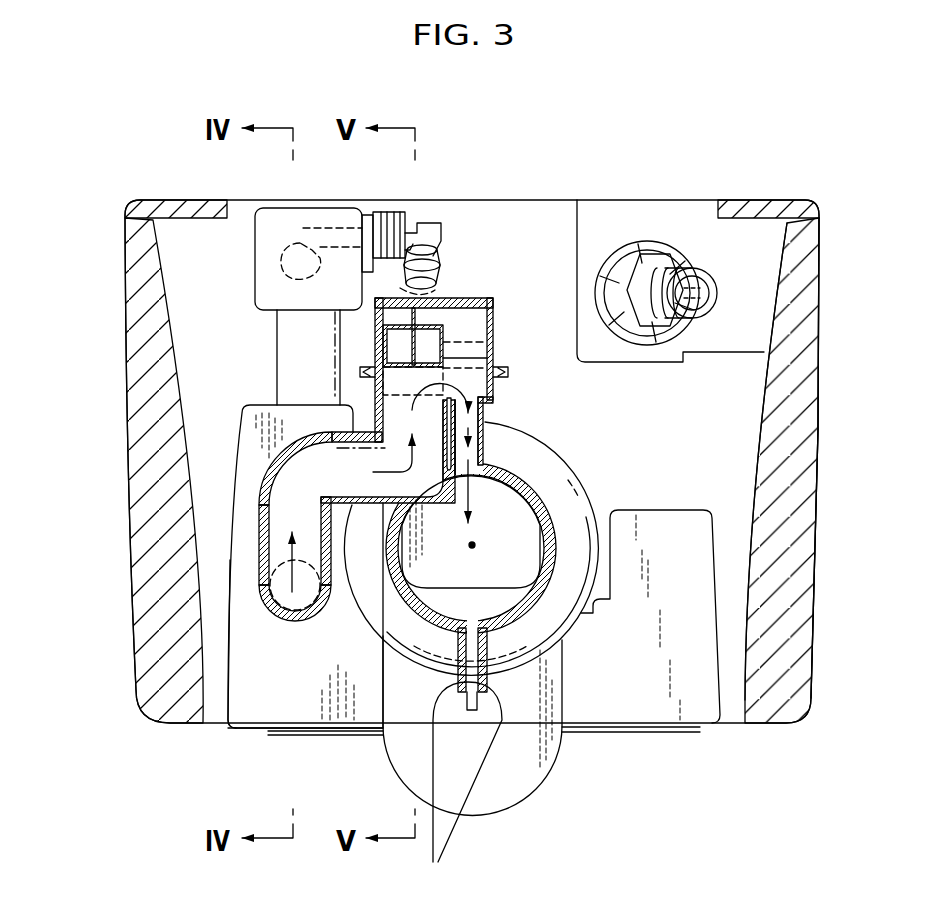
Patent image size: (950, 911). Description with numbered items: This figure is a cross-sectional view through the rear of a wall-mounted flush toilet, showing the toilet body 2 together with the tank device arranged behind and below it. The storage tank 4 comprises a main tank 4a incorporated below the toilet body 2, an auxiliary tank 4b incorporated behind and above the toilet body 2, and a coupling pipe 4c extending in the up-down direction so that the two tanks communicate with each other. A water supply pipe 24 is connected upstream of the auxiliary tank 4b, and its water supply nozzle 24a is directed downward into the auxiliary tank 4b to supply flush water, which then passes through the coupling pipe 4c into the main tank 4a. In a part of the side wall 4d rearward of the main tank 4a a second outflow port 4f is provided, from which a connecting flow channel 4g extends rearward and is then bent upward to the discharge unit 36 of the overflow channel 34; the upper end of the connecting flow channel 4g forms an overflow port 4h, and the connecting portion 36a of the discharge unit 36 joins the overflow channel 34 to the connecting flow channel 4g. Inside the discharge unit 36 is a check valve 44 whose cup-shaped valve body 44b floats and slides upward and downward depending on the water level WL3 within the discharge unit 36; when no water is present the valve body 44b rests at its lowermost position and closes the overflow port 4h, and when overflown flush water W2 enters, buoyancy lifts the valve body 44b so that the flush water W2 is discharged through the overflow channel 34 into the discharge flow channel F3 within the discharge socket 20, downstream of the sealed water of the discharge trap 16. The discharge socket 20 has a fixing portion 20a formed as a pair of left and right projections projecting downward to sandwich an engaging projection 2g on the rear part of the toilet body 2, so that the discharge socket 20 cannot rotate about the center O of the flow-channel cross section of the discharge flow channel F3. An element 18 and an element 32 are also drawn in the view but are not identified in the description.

The toilet body 2 is at (822, 470).
The casing 18 is at (838, 459).
The bolt 32 is at (712, 274).
The storage tank 4 is at (52, 252).
The main tank 4a is at (238, 470).
The auxiliary tank 4b is at (250, 276).
The coupling pipe 4c is at (296, 372).
The side wall 4d is at (247, 575).
The second outflow port 4f is at (276, 604).
The connecting flow channel 4g is at (283, 528).
The overflow port 4h is at (484, 420).
The water supply pipe 24 is at (430, 300).
The water supply nozzle 24a is at (300, 243).
The discharge unit 36 is at (483, 293).
The connecting portion 36a is at (545, 416).
The overflow channel 34 is at (486, 433).
The check valve 44 is at (433, 318).
The valve body 44b is at (443, 328).
The water level WL3 is at (470, 341).
The discharge socket 20 is at (513, 633).
The fixing portion 20a is at (458, 789).
The discharge trap 16 is at (489, 817).
The engaging projection 2g is at (470, 702).
The discharge flow channel F3 is at (490, 582).
The center O is at (475, 545).
The flush water W2 is at (414, 377).